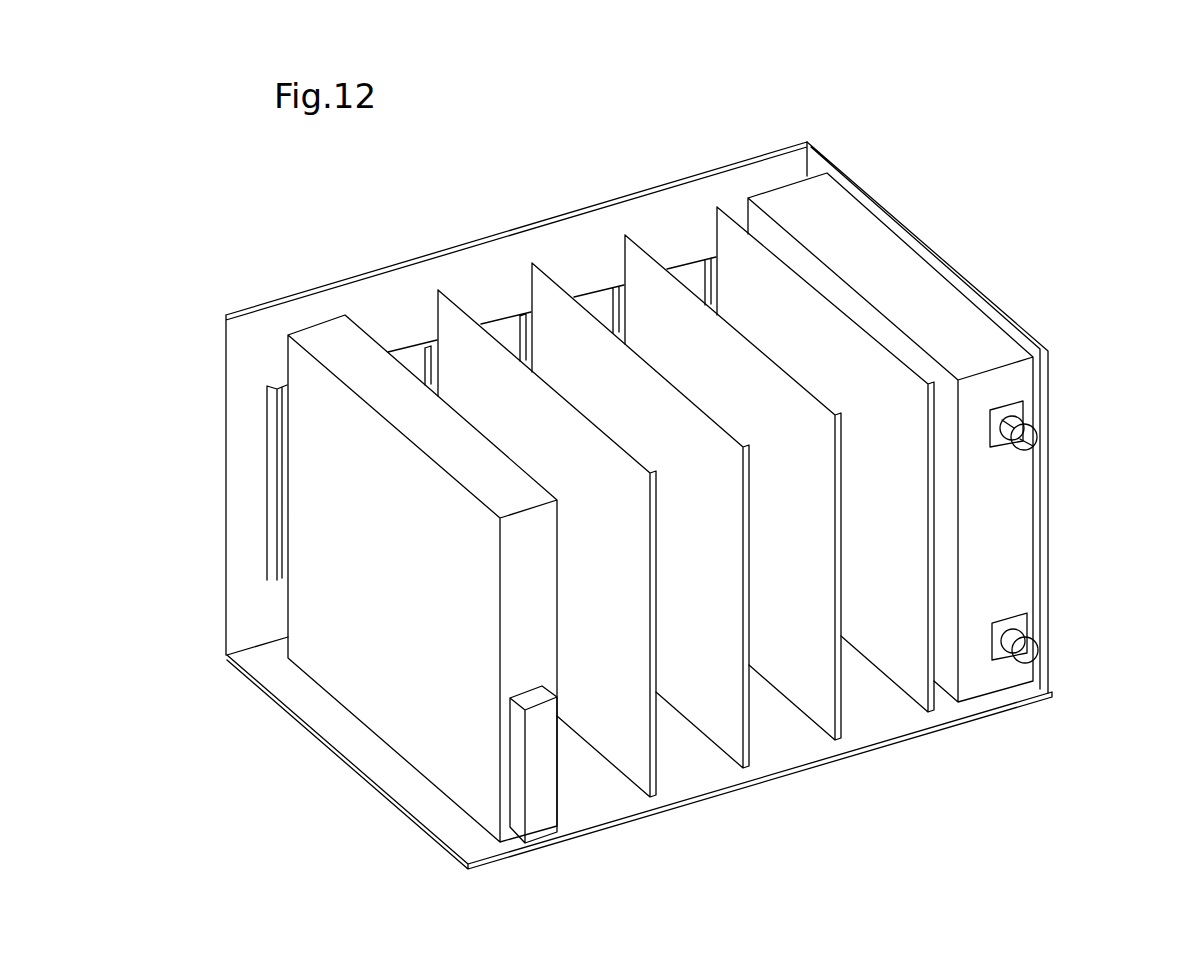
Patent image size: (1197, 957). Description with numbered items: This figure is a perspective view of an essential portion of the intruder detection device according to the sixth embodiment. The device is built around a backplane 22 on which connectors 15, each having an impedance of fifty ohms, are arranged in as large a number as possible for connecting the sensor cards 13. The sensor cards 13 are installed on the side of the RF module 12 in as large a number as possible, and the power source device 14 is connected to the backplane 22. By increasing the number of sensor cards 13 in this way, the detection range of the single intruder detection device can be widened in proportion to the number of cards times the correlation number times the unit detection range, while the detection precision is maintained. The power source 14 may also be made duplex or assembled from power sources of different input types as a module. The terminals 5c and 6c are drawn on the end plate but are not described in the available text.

The RF module 12 is at (886, 243).
The sensor card 13 is at (449, 366).
The power source device 14 is at (324, 667).
The connector 15 is at (428, 356).
The backplane 22 is at (408, 357).
The positive terminal 5c is at (1027, 438).
The negative terminal 6c is at (1027, 650).